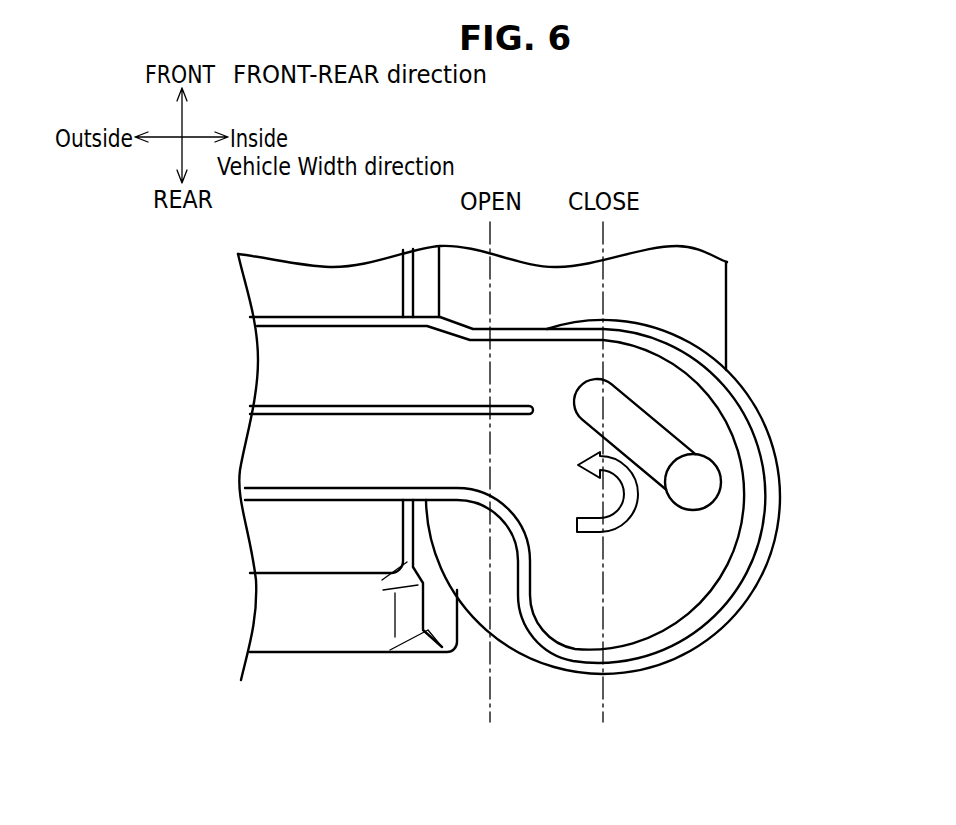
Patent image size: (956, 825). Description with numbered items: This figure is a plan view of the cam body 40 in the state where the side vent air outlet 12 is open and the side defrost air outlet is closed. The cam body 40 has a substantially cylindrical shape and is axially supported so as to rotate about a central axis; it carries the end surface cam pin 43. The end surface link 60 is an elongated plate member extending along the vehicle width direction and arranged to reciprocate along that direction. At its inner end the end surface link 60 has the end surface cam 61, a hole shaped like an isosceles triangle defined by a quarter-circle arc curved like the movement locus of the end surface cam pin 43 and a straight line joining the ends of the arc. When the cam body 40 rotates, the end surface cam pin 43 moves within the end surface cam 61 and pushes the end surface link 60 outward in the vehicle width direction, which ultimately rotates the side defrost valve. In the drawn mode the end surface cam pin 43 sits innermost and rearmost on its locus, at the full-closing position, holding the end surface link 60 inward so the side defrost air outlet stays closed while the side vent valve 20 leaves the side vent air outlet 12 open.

The end surface link 60 is at (372, 353).
The end surface cam 61 is at (678, 418).
The end surface cam pin 43 is at (693, 482).
The side vent valve 20 is at (272, 540).
The cam body 40 is at (466, 557).
The side vent air outlet 12 is at (303, 607).